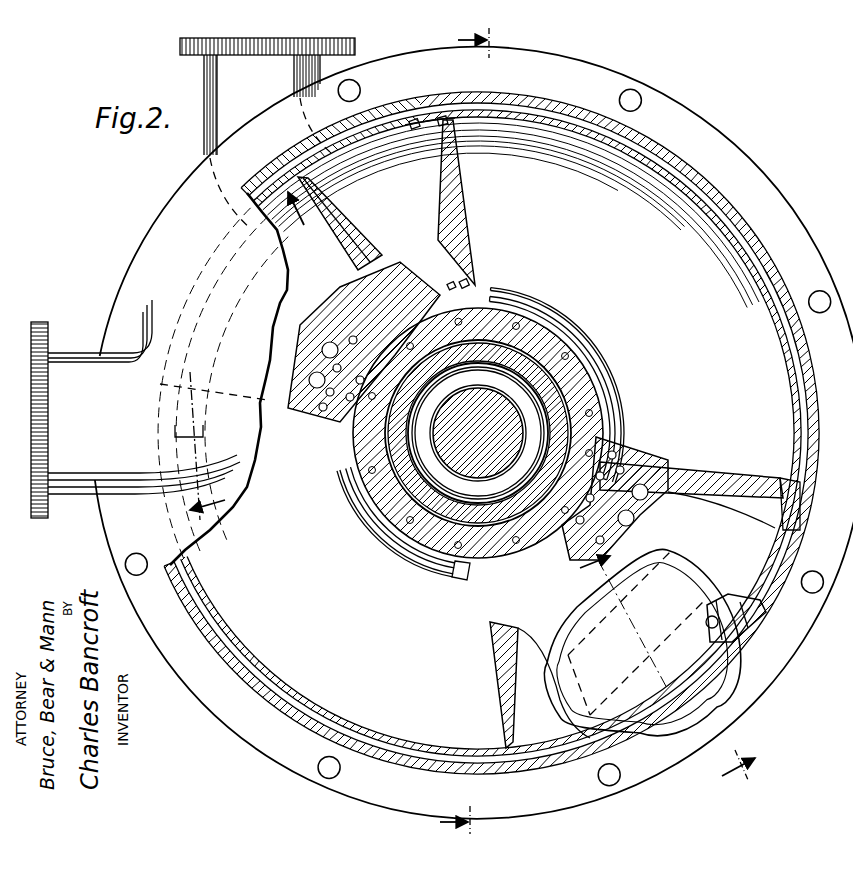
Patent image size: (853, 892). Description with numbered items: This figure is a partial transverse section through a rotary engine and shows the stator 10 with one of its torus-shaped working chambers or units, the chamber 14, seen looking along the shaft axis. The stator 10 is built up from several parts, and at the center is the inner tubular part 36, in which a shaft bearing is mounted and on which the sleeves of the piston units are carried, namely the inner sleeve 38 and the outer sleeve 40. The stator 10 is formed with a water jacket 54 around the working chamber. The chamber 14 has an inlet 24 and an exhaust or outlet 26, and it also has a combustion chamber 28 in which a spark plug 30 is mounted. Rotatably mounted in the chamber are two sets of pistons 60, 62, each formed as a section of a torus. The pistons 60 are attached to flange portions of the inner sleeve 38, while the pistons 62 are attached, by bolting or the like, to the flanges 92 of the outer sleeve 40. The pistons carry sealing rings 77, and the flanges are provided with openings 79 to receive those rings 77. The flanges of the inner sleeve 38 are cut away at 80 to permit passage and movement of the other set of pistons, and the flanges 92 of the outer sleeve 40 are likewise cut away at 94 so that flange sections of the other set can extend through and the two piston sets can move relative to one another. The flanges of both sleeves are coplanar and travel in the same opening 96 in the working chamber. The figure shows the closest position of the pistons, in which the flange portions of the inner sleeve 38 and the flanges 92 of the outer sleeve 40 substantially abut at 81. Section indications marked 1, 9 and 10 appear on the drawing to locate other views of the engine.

The working chamber 14 is at (695, 188).
The water jacket 54 is at (648, 152).
The inlet 24 is at (262, 68).
The exhaust or outlet 26 is at (112, 424).
The central inner tubular part 36 is at (500, 352).
The outer sleeve 40 is at (568, 333).
The opening 96 is at (600, 366).
The cut-away portion of flanges 94 is at (612, 438).
The inner sleeve 38 is at (378, 528).
The cut-away portion of flanges 80 is at (458, 578).
The pistons 60 is at (458, 204).
The sealing rings 77 is at (418, 124).
The openings 79 is at (468, 282).
The abutment position 81 is at (395, 306).
The pistons 62 is at (312, 418).
The flanges 92 is at (326, 432).
The combustion chamber 28 is at (642, 642).
The spark plug 30 is at (748, 620).
The section line 1 is at (475, 434).
The section line 9 is at (250, 359).
The stator 10 is at (666, 678).